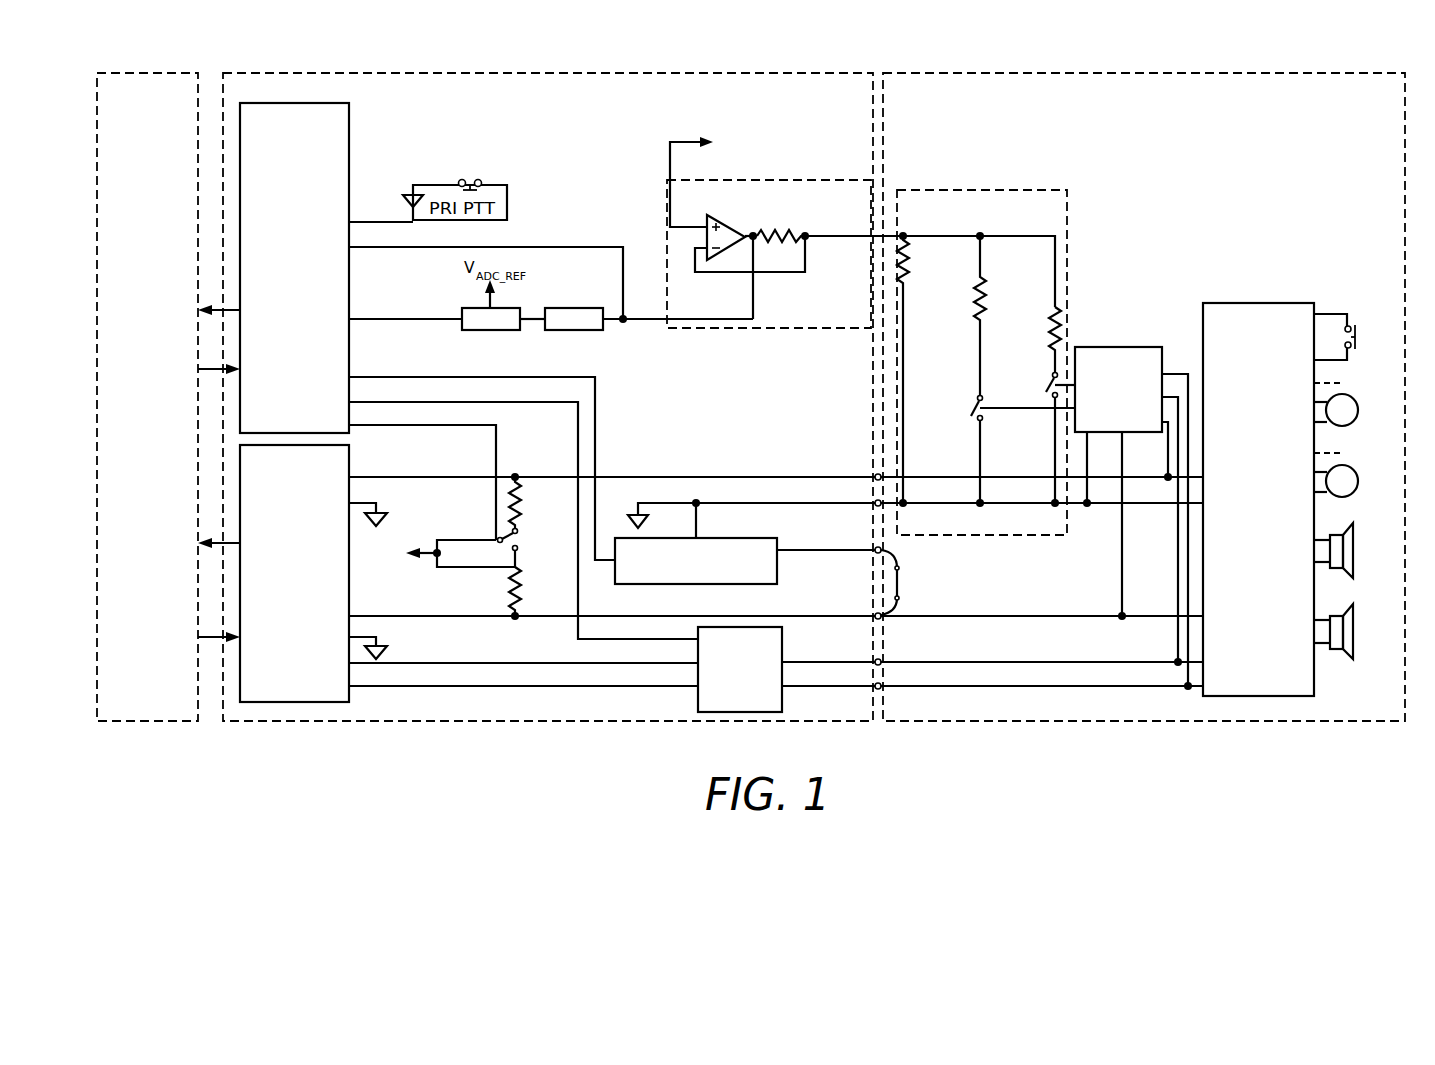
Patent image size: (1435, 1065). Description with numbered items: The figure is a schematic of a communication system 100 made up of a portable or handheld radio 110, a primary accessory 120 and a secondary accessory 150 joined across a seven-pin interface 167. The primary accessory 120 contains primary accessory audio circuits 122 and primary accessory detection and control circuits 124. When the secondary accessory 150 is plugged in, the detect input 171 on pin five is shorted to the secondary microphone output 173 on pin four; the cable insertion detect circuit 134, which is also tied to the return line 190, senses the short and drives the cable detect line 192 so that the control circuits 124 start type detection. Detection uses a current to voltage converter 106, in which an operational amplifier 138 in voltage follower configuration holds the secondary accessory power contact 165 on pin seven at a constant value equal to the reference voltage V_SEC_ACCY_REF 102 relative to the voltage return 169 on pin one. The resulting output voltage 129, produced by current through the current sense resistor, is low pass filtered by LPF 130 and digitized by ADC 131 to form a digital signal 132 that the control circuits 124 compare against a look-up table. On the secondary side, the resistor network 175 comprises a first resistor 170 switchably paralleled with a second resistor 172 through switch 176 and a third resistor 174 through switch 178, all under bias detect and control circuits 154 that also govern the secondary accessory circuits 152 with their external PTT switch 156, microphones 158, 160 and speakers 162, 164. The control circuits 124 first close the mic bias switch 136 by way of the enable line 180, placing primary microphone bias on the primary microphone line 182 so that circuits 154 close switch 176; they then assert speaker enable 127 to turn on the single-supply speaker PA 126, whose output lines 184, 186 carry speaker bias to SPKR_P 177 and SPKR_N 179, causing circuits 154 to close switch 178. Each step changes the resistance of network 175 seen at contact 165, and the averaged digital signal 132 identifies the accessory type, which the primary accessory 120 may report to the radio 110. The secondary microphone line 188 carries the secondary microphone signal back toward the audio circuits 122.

The communication system 100 is at (1322, 768).
The secondary accessory reference voltage 102 is at (773, 127).
The current to voltage converter 106 is at (667, 190).
The radio 110 is at (155, 722).
The primary accessory 120 is at (548, 722).
The primary accessory audio circuits 122 is at (349, 459).
The primary accessory detection and control circuits 124 is at (333, 103).
The speaker PA 126 is at (698, 652).
The speaker enable 127 is at (578, 637).
The output voltage 129 is at (648, 318).
The low pass filter 130 is at (575, 308).
The analog to digital converter 131 is at (468, 330).
The digital signal 132 is at (418, 317).
The cable insertion detect circuit 134 is at (725, 538).
The mic bias switch 136 is at (497, 538).
The operational amplifier 138 is at (708, 218).
The secondary accessory 150 is at (1146, 722).
The secondary accessory circuits 152 is at (1295, 303).
The bias detect and control circuits 154 is at (1130, 347).
The external push-to-talk switch 156 is at (1340, 362).
The microphone 158 is at (1340, 427).
The microphone 160 is at (1340, 498).
The speaker 162 is at (1350, 576).
The speaker 164 is at (1350, 657).
The secondary accessory power contact 165 is at (886, 218).
The interface 167 is at (883, 72).
The voltage return 169 is at (882, 510).
The first resistor 170 is at (905, 287).
The detect input 171 is at (870, 553).
The second resistor 172 is at (983, 290).
The secondary microphone output 173 is at (897, 628).
The third resistor 174 is at (1062, 305).
The resistor network 175 is at (1068, 205).
The switch SW-y 176 is at (975, 408).
The SPKR_P 177 is at (897, 672).
The switch SW-z 178 is at (1047, 376).
The SPKR_N 179 is at (882, 691).
The primary mic bias enable line 180 is at (498, 441).
The primary microphone bias line 182 is at (725, 476).
The speaker positive line 184 is at (797, 660).
The speaker negative line 186 is at (795, 689).
The secondary mic line 188 is at (637, 615).
The return line 190 is at (726, 503).
The cable detect line 192 is at (597, 443).